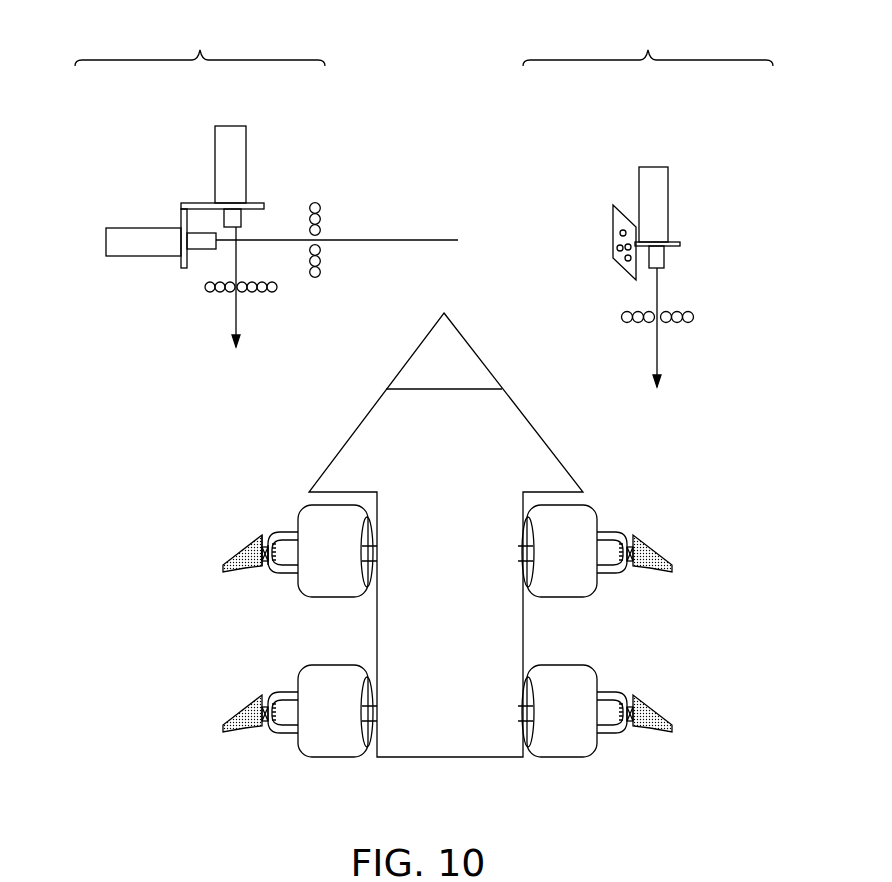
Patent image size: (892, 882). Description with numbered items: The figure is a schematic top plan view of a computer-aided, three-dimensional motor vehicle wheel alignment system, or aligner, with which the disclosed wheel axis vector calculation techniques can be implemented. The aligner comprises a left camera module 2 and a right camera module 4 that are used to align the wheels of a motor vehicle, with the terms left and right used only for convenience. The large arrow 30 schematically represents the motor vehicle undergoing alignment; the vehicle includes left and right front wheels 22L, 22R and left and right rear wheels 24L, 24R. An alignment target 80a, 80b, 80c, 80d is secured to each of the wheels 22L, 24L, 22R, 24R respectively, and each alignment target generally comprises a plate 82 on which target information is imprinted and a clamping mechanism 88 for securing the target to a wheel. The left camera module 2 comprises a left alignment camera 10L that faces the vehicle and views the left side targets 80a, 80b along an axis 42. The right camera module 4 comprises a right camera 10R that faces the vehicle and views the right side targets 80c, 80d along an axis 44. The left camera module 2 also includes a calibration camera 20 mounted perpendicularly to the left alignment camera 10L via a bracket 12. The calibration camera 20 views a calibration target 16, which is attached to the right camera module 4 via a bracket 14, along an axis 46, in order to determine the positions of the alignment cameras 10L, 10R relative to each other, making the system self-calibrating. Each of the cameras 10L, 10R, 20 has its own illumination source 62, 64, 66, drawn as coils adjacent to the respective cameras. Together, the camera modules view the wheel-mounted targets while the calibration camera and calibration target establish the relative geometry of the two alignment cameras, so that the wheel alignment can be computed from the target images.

The left camera module 2 is at (200, 43).
The right camera module 4 is at (648, 43).
The bracket 12 is at (165, 178).
The left alignment camera 10L is at (228, 156).
The calibration camera 20 is at (124, 239).
The axis 46 is at (398, 240).
The illumination source 62 is at (322, 272).
The illumination source 64 is at (205, 283).
The axis 42 is at (233, 316).
The right camera 10R is at (672, 200).
The calibration target 16 is at (612, 242).
The bracket 14 is at (716, 255).
The illumination source 66 is at (635, 323).
The axis 44 is at (660, 357).
The arrow 30 is at (505, 612).
The left front wheel 22L is at (326, 590).
The right front wheel 22R is at (598, 590).
The left rear wheel 24L is at (333, 758).
The right rear wheel 24R is at (568, 758).
The alignment target 80a is at (225, 553).
The alignment target 80b is at (228, 705).
The alignment target 80c is at (672, 550).
The alignment target 80d is at (680, 708).
The plate 82 is at (262, 540).
The clamping mechanism 88 is at (268, 575).